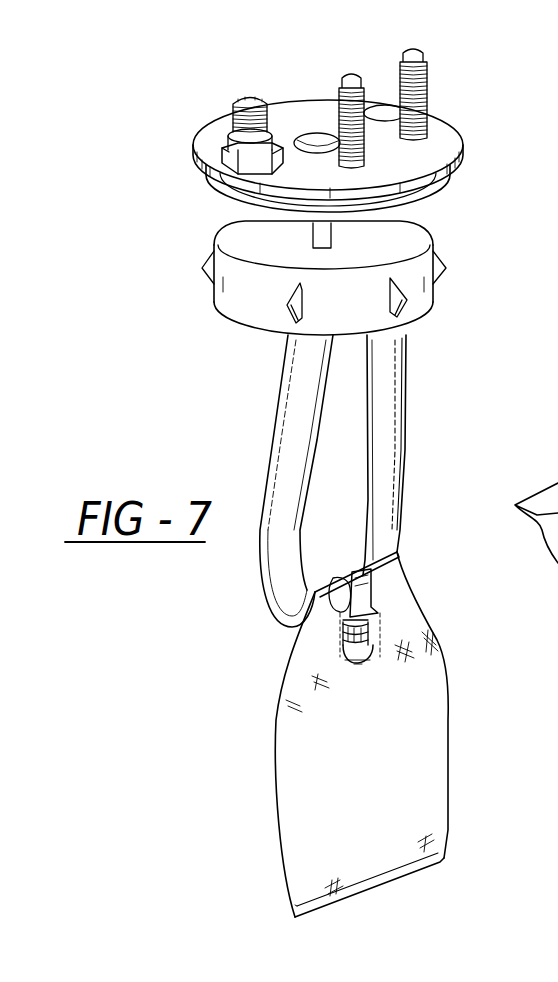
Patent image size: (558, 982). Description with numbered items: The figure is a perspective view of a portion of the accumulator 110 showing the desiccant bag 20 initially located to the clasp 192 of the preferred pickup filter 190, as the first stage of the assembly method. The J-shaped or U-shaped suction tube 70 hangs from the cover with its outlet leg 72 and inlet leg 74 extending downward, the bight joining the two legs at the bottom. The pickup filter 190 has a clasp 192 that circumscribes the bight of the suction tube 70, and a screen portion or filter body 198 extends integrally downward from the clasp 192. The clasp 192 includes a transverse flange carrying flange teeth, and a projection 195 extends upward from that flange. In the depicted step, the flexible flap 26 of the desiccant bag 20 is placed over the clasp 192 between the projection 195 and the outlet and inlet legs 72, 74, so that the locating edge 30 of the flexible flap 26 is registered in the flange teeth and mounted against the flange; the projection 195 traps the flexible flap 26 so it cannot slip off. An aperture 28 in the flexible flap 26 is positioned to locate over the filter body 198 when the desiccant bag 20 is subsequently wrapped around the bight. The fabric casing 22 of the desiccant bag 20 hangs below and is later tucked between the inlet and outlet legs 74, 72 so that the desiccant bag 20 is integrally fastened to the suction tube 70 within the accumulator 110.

The accumulator 110 is at (499, 213).
The suction tube 70 is at (393, 368).
The outlet leg 72 is at (388, 423).
The inlet leg 74 is at (300, 416).
The locating edge 30 is at (335, 578).
The flexible flap 26 is at (387, 570).
The projection 195 is at (367, 580).
The clasp 192 is at (367, 597).
The filter body 198 is at (340, 661).
The aperture 28 is at (367, 660).
The pickup filter 190 is at (358, 657).
The fabric casing 22 is at (305, 795).
The desiccant bag 20 is at (446, 823).